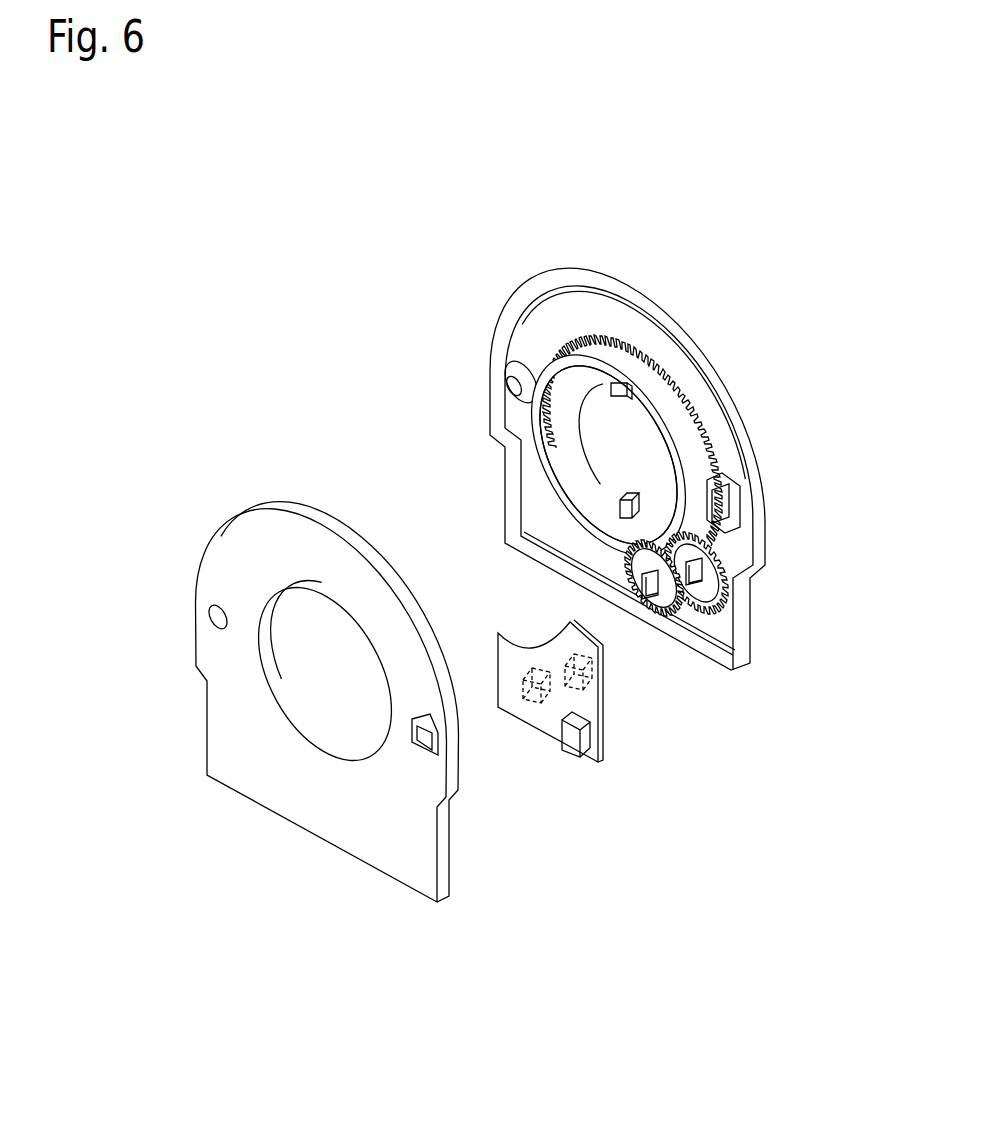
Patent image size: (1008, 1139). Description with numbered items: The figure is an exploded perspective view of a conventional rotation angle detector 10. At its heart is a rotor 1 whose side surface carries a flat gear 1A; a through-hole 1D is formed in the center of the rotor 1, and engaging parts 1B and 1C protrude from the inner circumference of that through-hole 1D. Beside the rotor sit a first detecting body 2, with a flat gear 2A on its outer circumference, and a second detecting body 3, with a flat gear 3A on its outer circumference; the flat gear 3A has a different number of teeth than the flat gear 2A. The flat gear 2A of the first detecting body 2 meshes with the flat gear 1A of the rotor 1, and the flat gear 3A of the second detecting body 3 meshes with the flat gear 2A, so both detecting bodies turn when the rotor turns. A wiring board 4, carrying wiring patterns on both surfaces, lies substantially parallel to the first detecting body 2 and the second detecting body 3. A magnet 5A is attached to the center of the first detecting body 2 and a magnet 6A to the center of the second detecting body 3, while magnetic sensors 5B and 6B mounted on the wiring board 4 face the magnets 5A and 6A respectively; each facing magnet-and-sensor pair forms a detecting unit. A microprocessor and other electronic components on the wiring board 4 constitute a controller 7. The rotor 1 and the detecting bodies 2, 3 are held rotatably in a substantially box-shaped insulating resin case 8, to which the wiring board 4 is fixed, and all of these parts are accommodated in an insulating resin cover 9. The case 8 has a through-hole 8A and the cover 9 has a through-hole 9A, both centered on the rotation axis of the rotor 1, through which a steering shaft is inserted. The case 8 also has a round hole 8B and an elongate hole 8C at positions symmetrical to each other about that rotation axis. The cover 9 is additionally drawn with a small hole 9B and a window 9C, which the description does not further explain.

The rotor 1 is at (625, 401).
The flat gear 1A is at (672, 386).
The engaging part 1B is at (620, 388).
The engaging part 1C is at (628, 508).
The through-hole 1D is at (587, 417).
The first detecting body 2 is at (750, 571).
The flat gear 2A is at (728, 562).
The second detecting body 3 is at (700, 634).
The flat gear 3A is at (666, 605).
The wiring board 4 is at (588, 719).
The magnet 5A is at (725, 588).
The magnetic sensor 5B is at (590, 680).
The magnet 6A is at (653, 592).
The magnetic sensor 6B is at (535, 702).
The controller 7 is at (573, 747).
The case 8 is at (632, 442).
The through-hole 8A is at (592, 445).
The round hole 8B is at (510, 380).
The elongate hole 8C is at (723, 507).
The cover 9 is at (296, 674).
The through-hole 9A is at (325, 715).
The hole 9B is at (212, 613).
The window of cover plate 9C is at (425, 742).
The rotation angle detector 10 is at (332, 368).